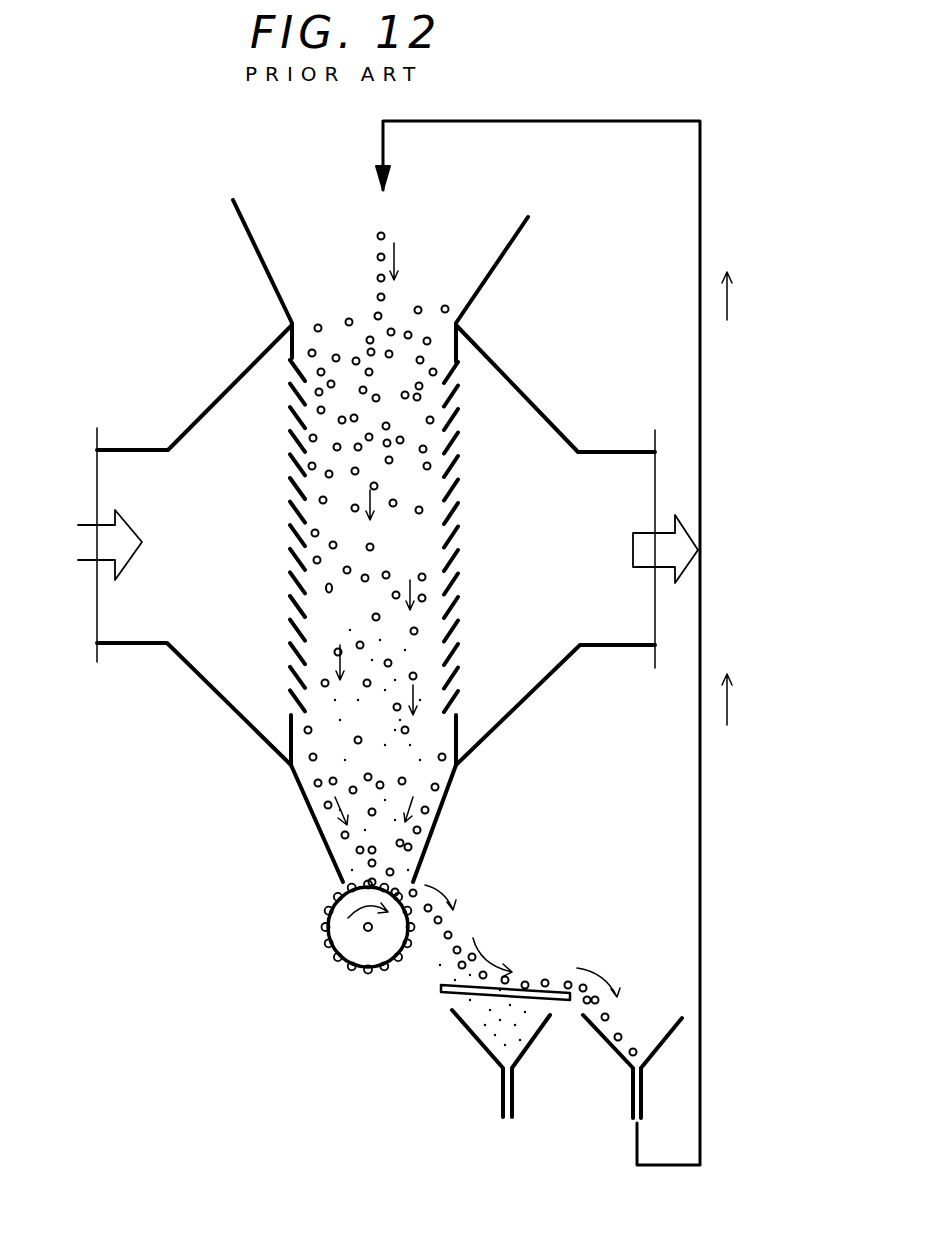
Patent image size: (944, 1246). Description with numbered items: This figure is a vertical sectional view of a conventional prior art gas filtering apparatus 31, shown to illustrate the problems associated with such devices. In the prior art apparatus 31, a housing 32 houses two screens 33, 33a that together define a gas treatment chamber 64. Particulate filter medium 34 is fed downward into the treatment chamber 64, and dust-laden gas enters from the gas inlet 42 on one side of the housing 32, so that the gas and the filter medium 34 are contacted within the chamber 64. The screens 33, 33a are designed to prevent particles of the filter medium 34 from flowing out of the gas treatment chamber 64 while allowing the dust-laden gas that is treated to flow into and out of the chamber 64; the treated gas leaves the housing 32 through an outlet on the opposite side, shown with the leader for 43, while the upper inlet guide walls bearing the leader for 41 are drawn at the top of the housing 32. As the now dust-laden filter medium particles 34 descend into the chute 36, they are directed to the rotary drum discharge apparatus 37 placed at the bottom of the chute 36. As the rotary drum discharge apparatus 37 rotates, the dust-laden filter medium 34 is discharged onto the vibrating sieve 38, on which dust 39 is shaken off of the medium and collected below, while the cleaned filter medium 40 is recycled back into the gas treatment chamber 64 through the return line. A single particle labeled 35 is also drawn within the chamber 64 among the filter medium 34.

The prior art apparatus 31 is at (161, 242).
The inlet guide walls 41 is at (273, 267).
The housing 32 is at (225, 388).
The screen 33 is at (293, 483).
The screen 33a is at (452, 463).
The particulate filter medium 34 is at (335, 545).
The particle 35 is at (327, 588).
The treatment chamber 64 is at (378, 600).
The chute 36 is at (313, 825).
The rotary drum discharge apparatus 37 is at (368, 927).
The vibrating sieve 38 is at (527, 992).
The dust 39 is at (510, 1033).
The cleaned filter medium 40 is at (618, 1033).
The gas inlet 42 is at (122, 628).
The air outlet duct 43 is at (617, 610).